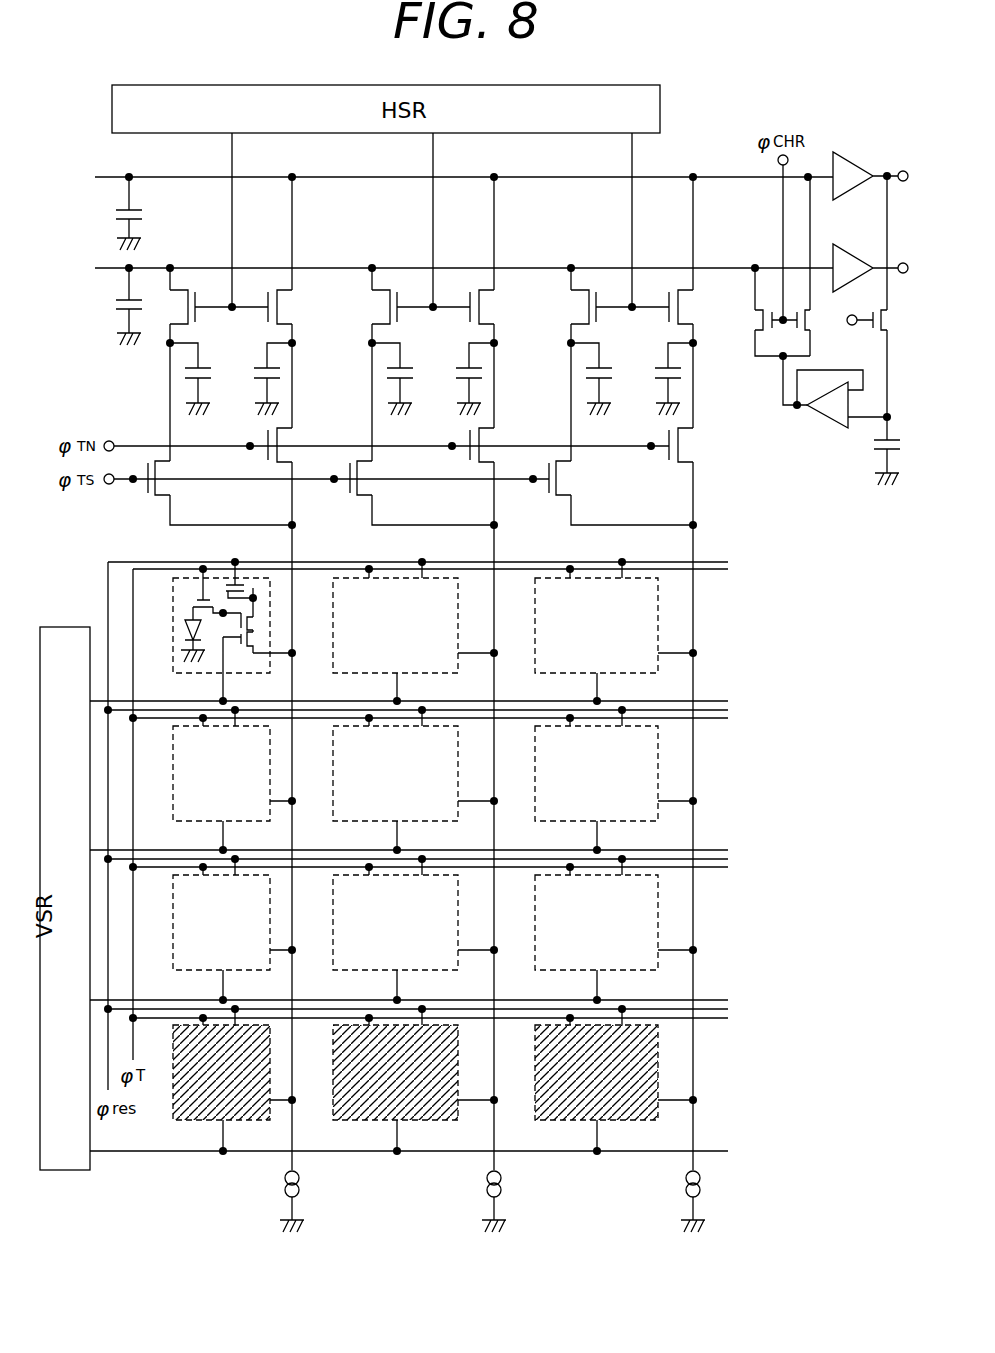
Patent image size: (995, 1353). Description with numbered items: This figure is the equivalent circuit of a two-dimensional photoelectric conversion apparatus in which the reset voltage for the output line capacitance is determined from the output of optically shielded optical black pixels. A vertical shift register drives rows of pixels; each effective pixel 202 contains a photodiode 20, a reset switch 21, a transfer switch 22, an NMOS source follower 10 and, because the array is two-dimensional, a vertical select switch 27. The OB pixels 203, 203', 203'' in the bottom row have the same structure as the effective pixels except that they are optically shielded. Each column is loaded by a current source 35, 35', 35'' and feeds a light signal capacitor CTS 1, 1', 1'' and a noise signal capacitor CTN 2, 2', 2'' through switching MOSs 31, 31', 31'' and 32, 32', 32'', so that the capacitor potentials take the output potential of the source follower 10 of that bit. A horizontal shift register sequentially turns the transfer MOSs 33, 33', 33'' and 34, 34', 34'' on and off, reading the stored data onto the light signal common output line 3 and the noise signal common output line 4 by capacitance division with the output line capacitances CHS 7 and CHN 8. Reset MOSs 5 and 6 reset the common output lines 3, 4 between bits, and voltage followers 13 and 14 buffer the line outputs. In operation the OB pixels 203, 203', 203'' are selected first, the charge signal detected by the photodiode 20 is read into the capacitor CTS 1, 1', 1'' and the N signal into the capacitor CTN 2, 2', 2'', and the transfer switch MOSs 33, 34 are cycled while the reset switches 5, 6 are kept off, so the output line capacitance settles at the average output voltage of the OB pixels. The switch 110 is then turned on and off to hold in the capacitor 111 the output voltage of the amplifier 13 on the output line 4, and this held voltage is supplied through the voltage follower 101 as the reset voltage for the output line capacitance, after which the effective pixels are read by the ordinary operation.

The light signal capacitor CTS 1 is at (203, 372).
The light signal capacitor CTS 1' is at (408, 371).
The light signal capacitor CTS 1'' is at (610, 371).
The noise signal capacitor CTN 2 is at (291, 379).
The noise signal capacitor CTN 2' is at (495, 379).
The noise signal capacitor CTN 2'' is at (696, 379).
The light signal common output line 3 is at (345, 268).
The noise signal common output line 4 is at (358, 177).
The reset MOS 5 is at (752, 322).
The reset MOS 6 is at (808, 318).
The output line capacitance CHS 7 is at (112, 304).
The output line capacitance CHN 8 is at (112, 213).
The NMOS source follower 10 is at (257, 613).
The voltage follower 13 is at (843, 162).
The voltage follower 14 is at (843, 254).
The photodiode 20 is at (174, 630).
The reset switch 21 is at (225, 588).
The transfer switch 22 is at (195, 606).
The vertical select switch 27 is at (262, 640).
The switching MOS 31 is at (187, 490).
The switching MOS 31' is at (393, 489).
The switching MOS 31'' is at (595, 489).
The switching MOS 32 is at (301, 441).
The switching MOS 32' is at (507, 441).
The switching MOS 32'' is at (707, 441).
The transfer MOS 33 is at (185, 341).
The transfer MOS 33' is at (374, 315).
The transfer MOS 33'' is at (577, 313).
The transfer MOS 34 is at (289, 301).
The transfer MOS 34' is at (494, 302).
The transfer MOS 34'' is at (688, 302).
The current source 35 is at (268, 1201).
The current source 35' is at (469, 1201).
The current source 35'' is at (667, 1201).
The voltage follower 101 is at (818, 420).
The switch 110 is at (872, 333).
The capacitor 111 is at (864, 447).
The pixel 202 is at (167, 576).
The OB pixel 203 is at (215, 1101).
The OB pixel 203' is at (412, 1101).
The OB pixel 203'' is at (612, 1101).